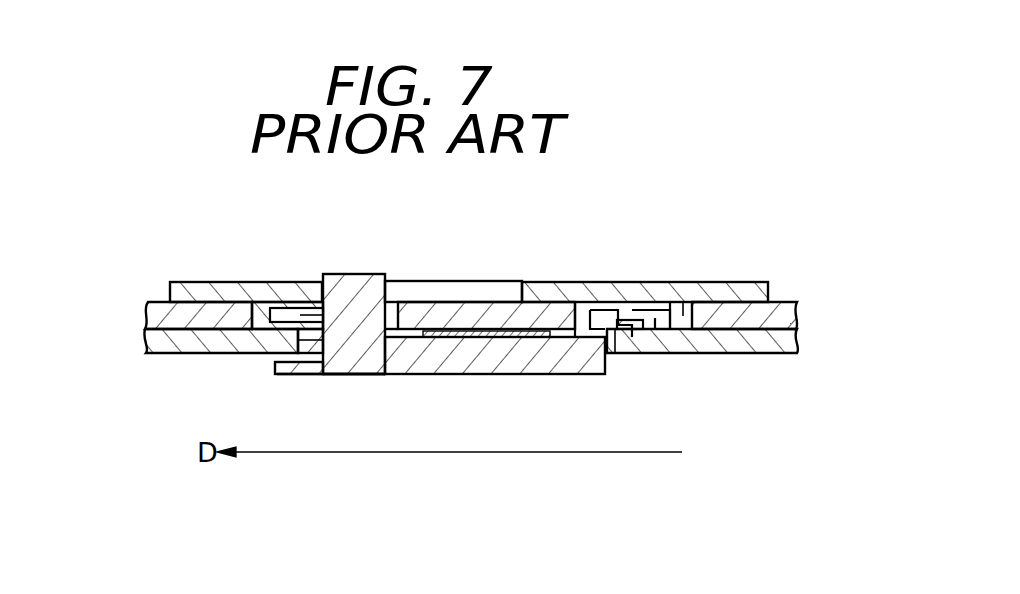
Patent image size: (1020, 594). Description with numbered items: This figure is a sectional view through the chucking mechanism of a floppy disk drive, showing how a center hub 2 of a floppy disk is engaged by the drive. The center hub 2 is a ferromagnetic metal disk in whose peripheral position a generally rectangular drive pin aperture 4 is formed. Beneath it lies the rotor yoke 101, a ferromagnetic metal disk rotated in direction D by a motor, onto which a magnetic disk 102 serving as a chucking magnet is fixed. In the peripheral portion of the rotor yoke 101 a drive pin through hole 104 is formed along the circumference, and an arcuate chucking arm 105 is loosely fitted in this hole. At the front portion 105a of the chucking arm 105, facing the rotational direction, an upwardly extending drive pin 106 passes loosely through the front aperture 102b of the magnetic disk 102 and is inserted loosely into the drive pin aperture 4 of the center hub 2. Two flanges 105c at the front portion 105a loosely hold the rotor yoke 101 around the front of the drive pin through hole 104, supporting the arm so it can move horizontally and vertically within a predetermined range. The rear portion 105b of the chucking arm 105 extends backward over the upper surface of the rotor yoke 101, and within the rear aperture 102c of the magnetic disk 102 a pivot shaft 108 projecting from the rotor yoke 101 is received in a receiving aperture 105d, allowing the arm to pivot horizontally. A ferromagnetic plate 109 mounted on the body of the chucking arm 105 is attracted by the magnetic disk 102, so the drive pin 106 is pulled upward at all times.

The center hub 2 is at (214, 302).
The drive pin aperture 4 is at (473, 285).
The rotor yoke 101 is at (172, 356).
The magnetic disk 102 is at (163, 298).
The front aperture 102b is at (262, 302).
The rear aperture 102c is at (693, 282).
The drive pin through hole 104 is at (306, 345).
The chucking arm 105 is at (413, 375).
The front portion of the chucking arm 105a is at (338, 376).
The rear portion of the chucking arm 105b is at (658, 302).
The flanges 105c is at (293, 308).
The receiving aperture 105d is at (620, 302).
The drive pin 106 is at (355, 277).
The pivot shaft 108 is at (637, 354).
The ferromagnetic plate 109 is at (450, 338).